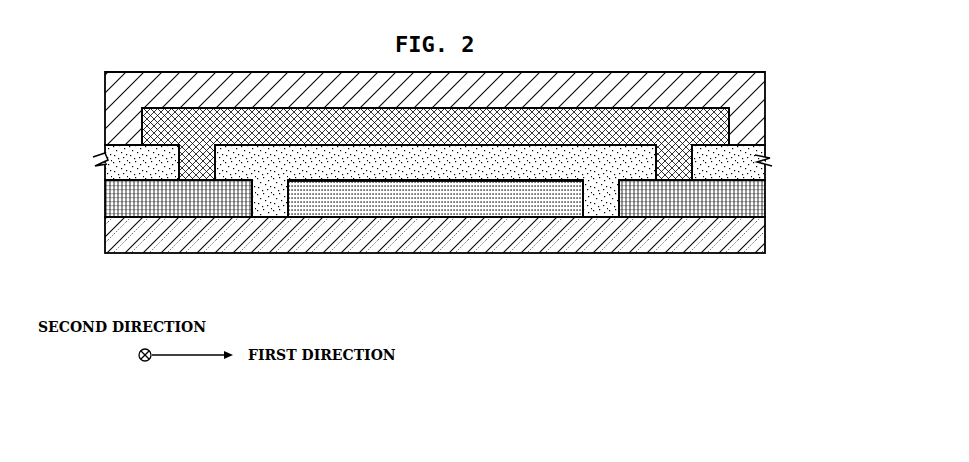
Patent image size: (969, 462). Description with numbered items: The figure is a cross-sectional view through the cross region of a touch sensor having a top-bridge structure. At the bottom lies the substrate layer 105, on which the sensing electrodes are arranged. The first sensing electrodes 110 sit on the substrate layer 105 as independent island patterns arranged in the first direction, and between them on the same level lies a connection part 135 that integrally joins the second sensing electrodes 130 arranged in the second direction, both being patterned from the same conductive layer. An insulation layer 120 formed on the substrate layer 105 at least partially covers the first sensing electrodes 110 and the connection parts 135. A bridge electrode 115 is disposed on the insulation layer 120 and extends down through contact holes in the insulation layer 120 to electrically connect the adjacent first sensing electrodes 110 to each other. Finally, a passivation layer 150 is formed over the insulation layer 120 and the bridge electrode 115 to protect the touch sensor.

The substrate layer 105 is at (765, 235).
The first sensing electrodes 110 is at (760, 198).
The bridge electrode 115 is at (728, 118).
The insulation layer 120 is at (772, 166).
The second sensing electrodes 130 is at (435, 250).
The connection parts 135 is at (438, 200).
The passivation layer 150 is at (765, 83).